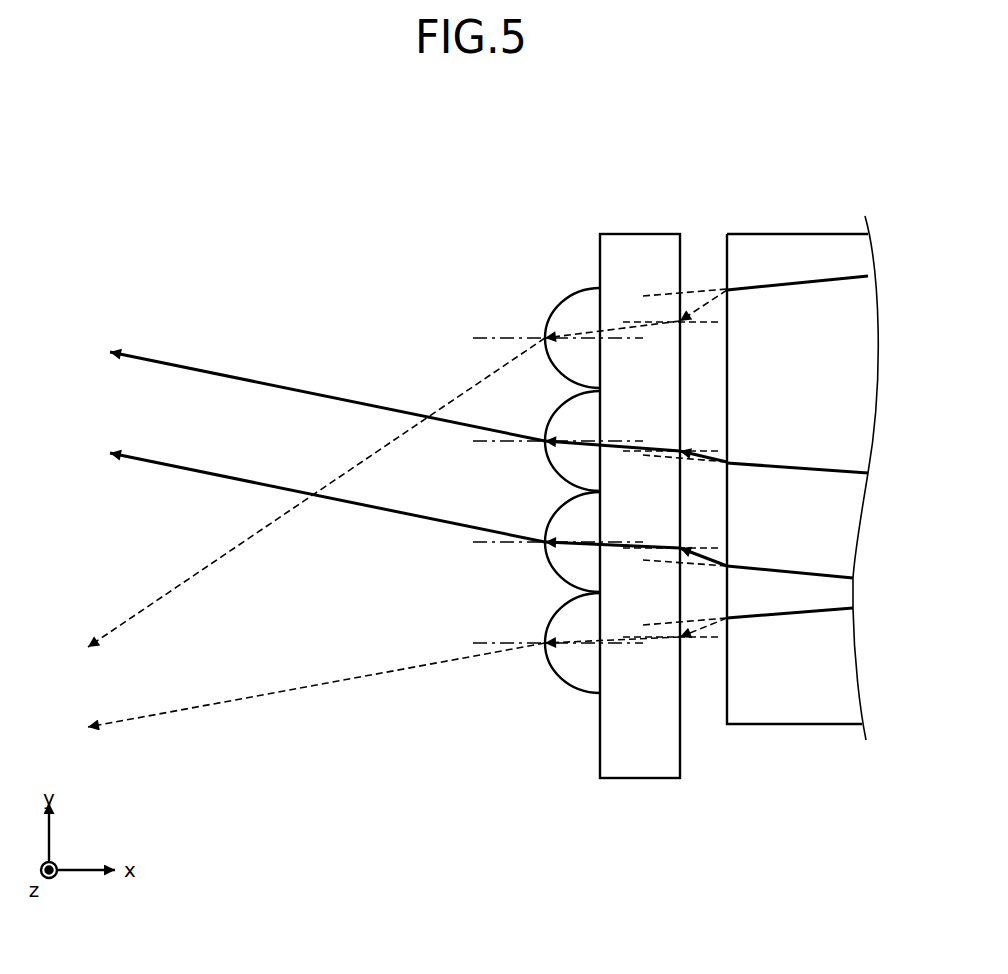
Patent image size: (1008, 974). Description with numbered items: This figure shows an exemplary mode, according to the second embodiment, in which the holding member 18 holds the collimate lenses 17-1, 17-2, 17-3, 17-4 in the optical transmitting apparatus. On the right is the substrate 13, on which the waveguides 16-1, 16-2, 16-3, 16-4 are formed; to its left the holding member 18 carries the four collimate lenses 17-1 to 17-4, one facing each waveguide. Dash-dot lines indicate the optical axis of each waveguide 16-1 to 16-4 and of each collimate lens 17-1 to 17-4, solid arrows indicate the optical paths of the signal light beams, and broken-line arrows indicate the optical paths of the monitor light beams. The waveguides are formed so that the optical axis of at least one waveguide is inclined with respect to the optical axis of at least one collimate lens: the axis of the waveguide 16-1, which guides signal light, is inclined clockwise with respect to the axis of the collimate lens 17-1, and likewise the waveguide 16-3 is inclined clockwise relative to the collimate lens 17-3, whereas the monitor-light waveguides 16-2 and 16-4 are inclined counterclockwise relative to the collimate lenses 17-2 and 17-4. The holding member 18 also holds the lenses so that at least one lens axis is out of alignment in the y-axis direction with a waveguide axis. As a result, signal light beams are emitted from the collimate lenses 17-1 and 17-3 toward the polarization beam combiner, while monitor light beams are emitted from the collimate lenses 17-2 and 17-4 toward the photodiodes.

The substrate 13 is at (834, 233).
The waveguide 16-1 is at (817, 468).
The waveguide 16-2 is at (817, 281).
The waveguide 16-3 is at (815, 578).
The waveguide 16-4 is at (828, 611).
The collimate lens 17-1 is at (559, 409).
The collimate lens 17-2 is at (559, 306).
The collimate lens 17-3 is at (559, 509).
The collimate lens 17-4 is at (559, 611).
The holding member 18 is at (639, 233).